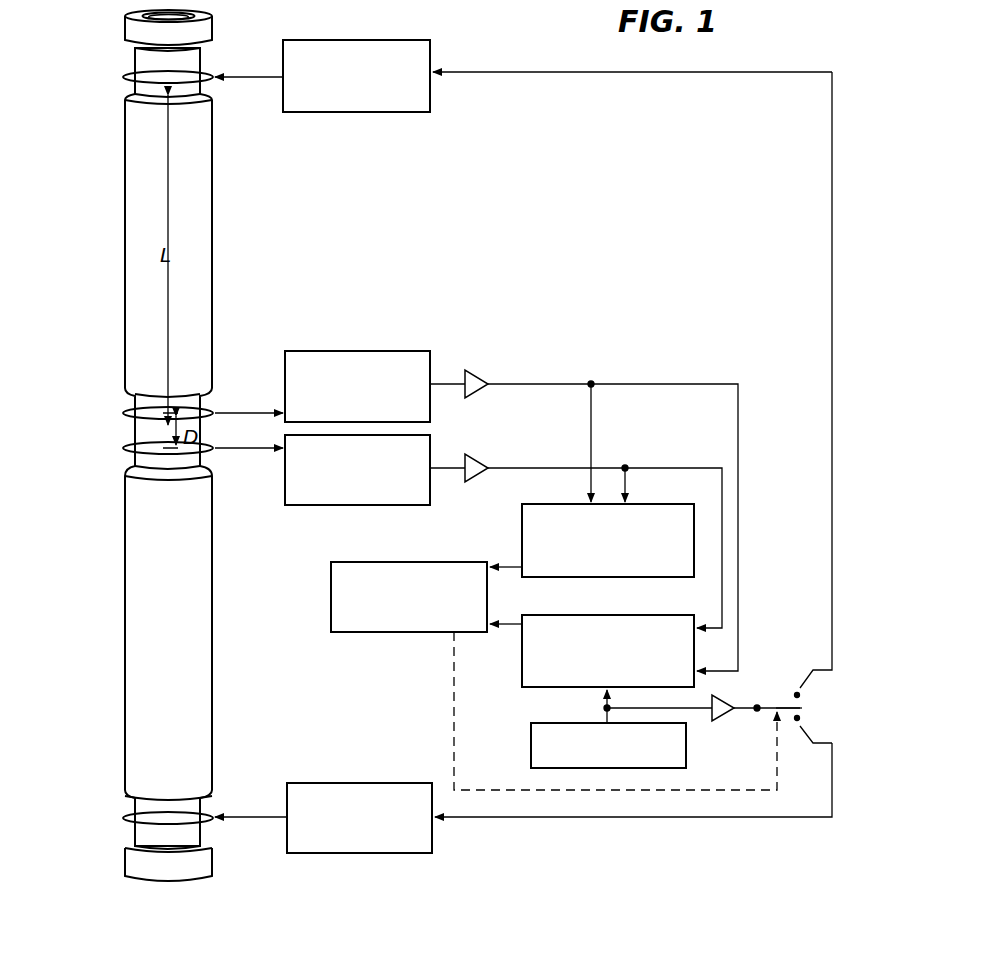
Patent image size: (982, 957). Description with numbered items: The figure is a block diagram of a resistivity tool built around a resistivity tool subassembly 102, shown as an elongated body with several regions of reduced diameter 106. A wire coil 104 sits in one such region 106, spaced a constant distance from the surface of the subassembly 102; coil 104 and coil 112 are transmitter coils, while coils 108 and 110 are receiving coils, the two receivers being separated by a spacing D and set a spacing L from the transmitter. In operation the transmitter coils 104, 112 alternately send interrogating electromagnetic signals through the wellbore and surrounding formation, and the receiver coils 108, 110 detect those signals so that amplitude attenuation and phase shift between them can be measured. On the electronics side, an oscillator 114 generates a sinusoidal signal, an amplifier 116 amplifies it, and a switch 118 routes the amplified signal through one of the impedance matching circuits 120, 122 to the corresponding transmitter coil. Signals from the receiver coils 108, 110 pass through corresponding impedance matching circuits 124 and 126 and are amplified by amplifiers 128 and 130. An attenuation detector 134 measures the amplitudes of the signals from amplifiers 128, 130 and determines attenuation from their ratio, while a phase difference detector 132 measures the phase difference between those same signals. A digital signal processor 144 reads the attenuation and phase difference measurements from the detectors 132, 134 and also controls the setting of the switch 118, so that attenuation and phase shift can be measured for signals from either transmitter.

The resistivity tool subassembly 102 is at (125, 30).
The wire coil 104 is at (125, 78).
The region of reduced diameter 106 is at (126, 86).
The receiving coil 108 is at (125, 413).
The receiving coil 110 is at (125, 448).
The transmitter coil 112 is at (125, 818).
The oscillator 114 is at (531, 743).
The amplifier 116 is at (728, 712).
The switch 118 is at (768, 708).
The impedance matching circuit 120 is at (373, 112).
The impedance matching circuit 122 is at (355, 853).
The impedance matching circuit 124 is at (352, 351).
The impedance matching circuit 126 is at (325, 505).
The amplifier 128 is at (482, 380).
The amplifier 130 is at (482, 464).
The phase difference detector 132 is at (522, 660).
The attenuation detector 134 is at (522, 537).
The digital signal processor 144 is at (400, 632).